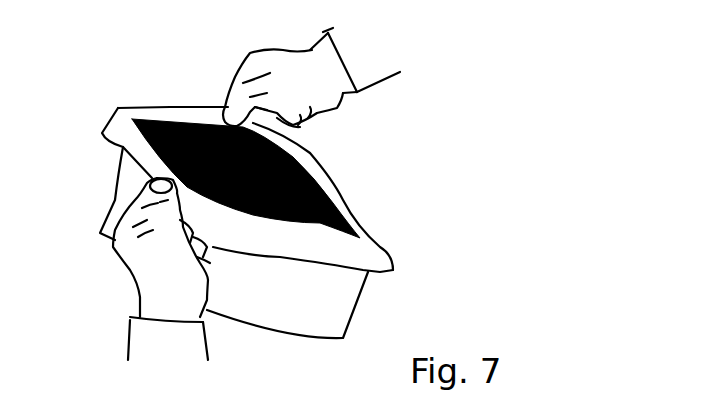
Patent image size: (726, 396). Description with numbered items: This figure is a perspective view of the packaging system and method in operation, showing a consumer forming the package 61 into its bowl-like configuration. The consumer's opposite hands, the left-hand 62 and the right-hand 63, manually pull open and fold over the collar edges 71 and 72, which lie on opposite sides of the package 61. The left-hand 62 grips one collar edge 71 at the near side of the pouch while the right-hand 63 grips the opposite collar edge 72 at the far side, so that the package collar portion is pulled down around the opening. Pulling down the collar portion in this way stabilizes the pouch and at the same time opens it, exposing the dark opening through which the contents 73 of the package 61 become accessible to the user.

The package 61 is at (333, 320).
The left-hand 62 is at (145, 297).
The right-hand 63 is at (336, 96).
The collar edge 71 is at (148, 150).
The collar edge 72 is at (320, 166).
The contents 73 is at (333, 208).